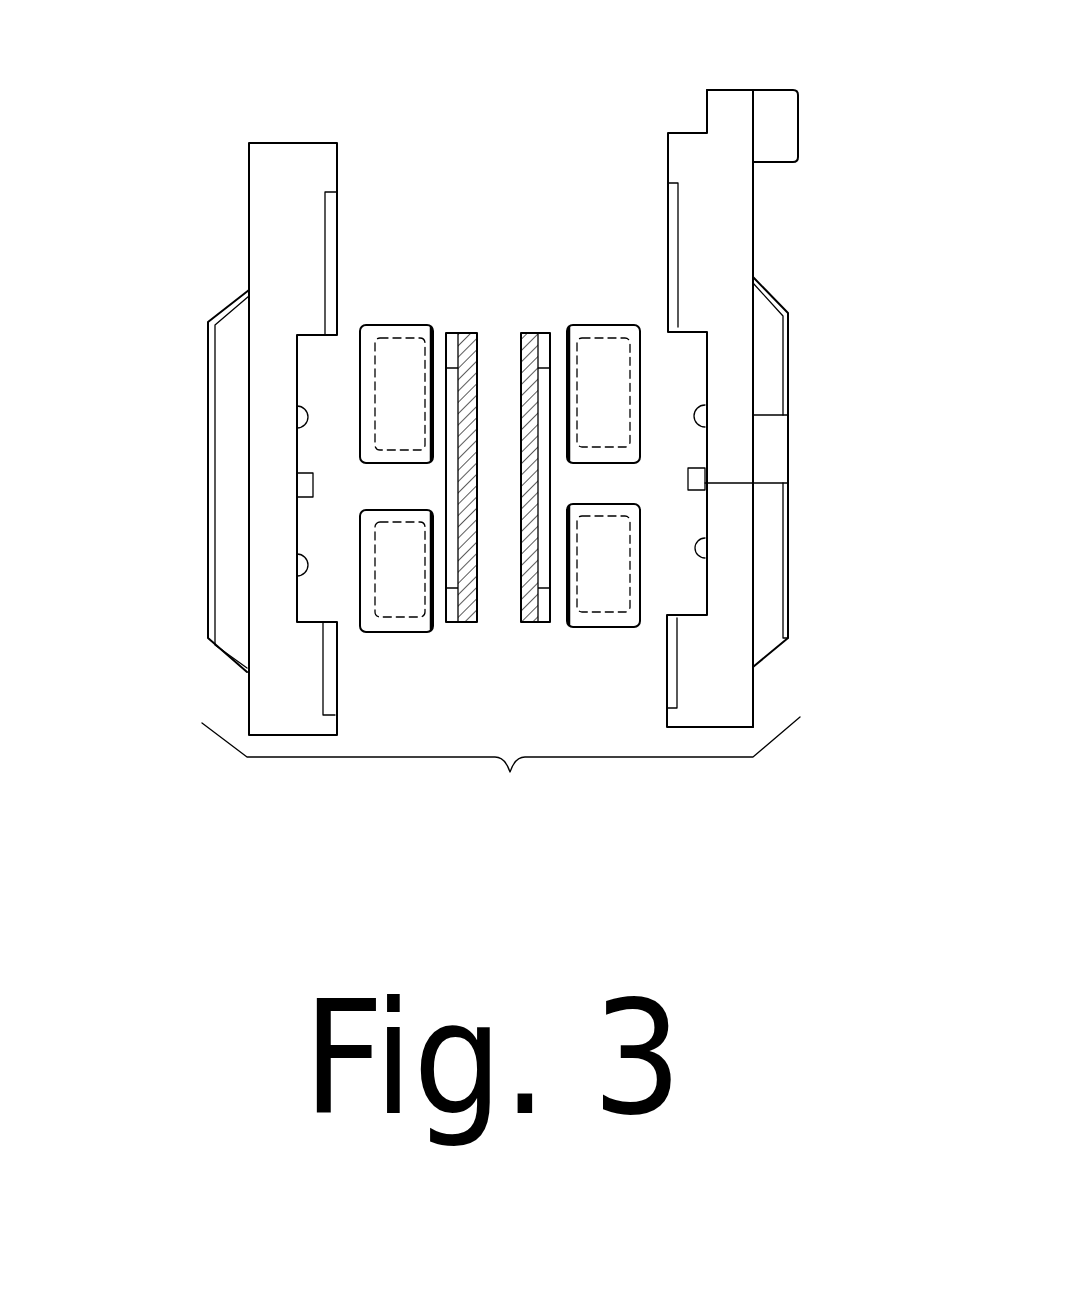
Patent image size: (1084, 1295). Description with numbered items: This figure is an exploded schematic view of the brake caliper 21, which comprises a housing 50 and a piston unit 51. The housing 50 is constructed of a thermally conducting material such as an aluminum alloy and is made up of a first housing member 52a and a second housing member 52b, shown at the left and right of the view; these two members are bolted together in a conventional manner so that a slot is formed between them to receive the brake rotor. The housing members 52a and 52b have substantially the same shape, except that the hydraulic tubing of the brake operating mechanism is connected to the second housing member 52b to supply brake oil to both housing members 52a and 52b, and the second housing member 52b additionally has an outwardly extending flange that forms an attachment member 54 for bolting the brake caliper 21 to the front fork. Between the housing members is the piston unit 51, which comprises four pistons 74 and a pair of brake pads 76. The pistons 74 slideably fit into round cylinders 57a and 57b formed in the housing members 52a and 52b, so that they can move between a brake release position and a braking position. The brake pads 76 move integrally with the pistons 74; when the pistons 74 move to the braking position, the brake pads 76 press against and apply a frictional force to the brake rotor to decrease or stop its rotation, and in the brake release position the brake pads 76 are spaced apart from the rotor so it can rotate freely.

The brake caliper 21 is at (850, 158).
The housing 50 is at (284, 141).
The piston unit 51 is at (497, 277).
The first housing member 52a is at (208, 373).
The second housing member 52b is at (790, 368).
The attachment member 54 is at (751, 90).
The round cylinders 57a is at (300, 425).
The round cylinders 57b is at (705, 557).
The pistons 74 is at (393, 325).
The brake pads 76 is at (524, 622).